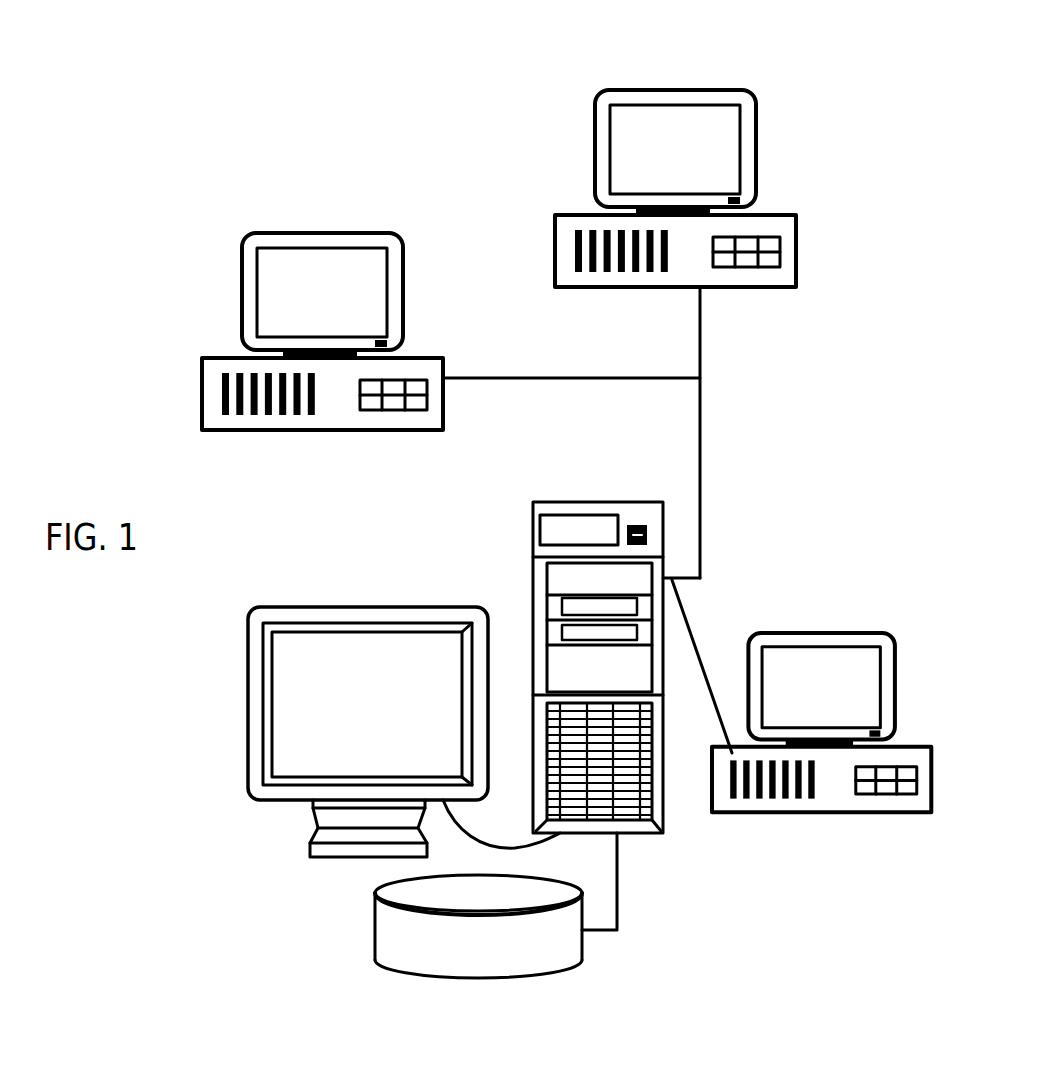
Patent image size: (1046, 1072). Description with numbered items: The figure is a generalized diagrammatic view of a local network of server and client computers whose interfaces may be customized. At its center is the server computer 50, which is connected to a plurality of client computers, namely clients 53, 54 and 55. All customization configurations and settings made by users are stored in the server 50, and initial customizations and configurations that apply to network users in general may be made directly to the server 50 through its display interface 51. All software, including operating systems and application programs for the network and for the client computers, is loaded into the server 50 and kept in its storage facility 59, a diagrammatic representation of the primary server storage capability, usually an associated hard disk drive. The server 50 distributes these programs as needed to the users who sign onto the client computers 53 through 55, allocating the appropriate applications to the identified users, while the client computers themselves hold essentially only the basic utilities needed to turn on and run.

The server computer 50 is at (532, 515).
The display interface 51 is at (250, 797).
The client computer 53 is at (340, 243).
The client computer 54 is at (665, 93).
The client computer 55 is at (788, 802).
The storage facility 59 is at (472, 946).